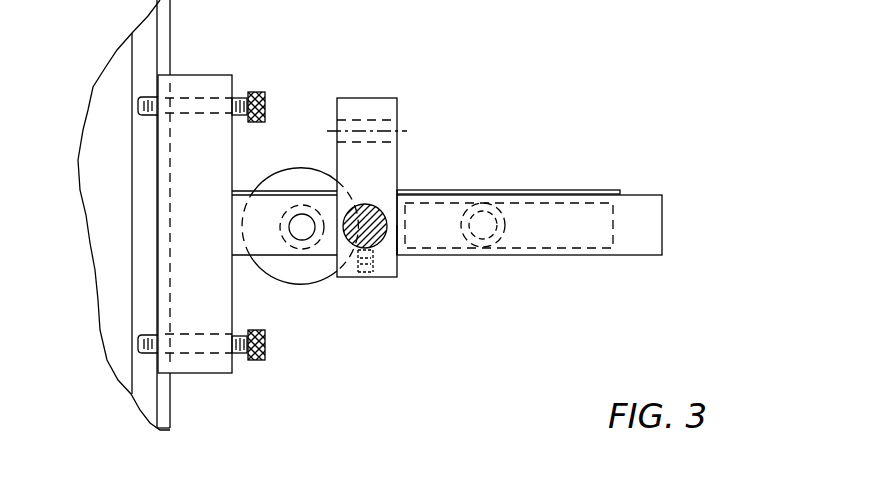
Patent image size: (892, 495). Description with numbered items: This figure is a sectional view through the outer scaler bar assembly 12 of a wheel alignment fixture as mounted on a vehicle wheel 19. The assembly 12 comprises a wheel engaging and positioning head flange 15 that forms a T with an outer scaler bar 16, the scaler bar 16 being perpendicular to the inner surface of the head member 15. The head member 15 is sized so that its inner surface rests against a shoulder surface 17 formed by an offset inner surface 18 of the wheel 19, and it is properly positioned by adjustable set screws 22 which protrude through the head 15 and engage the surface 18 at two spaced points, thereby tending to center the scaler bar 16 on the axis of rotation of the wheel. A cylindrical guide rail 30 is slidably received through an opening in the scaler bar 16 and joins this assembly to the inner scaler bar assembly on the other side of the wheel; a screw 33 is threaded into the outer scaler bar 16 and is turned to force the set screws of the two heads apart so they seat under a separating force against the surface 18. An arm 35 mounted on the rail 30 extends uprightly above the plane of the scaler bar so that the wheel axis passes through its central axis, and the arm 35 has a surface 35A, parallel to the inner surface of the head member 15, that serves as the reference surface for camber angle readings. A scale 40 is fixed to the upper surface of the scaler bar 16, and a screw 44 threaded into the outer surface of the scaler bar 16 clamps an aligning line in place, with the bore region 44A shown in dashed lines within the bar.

The outer scaler bar assembly 12 is at (500, 72).
The head flange 15 is at (190, 85).
The outer scaler bar 16 is at (272, 240).
The shoulder surface 17 is at (160, 405).
The offset inner surface 18 is at (142, 37).
The vehicle wheel 19 is at (112, 65).
The set screws 22 is at (255, 93).
The cylindrical guide rail 30 is at (378, 243).
The screw 33 is at (298, 222).
The arm 35 is at (382, 162).
The reference surface 35A is at (398, 233).
The scale 40 is at (565, 192).
The screw 44 is at (501, 204).
The channel 44A is at (586, 248).